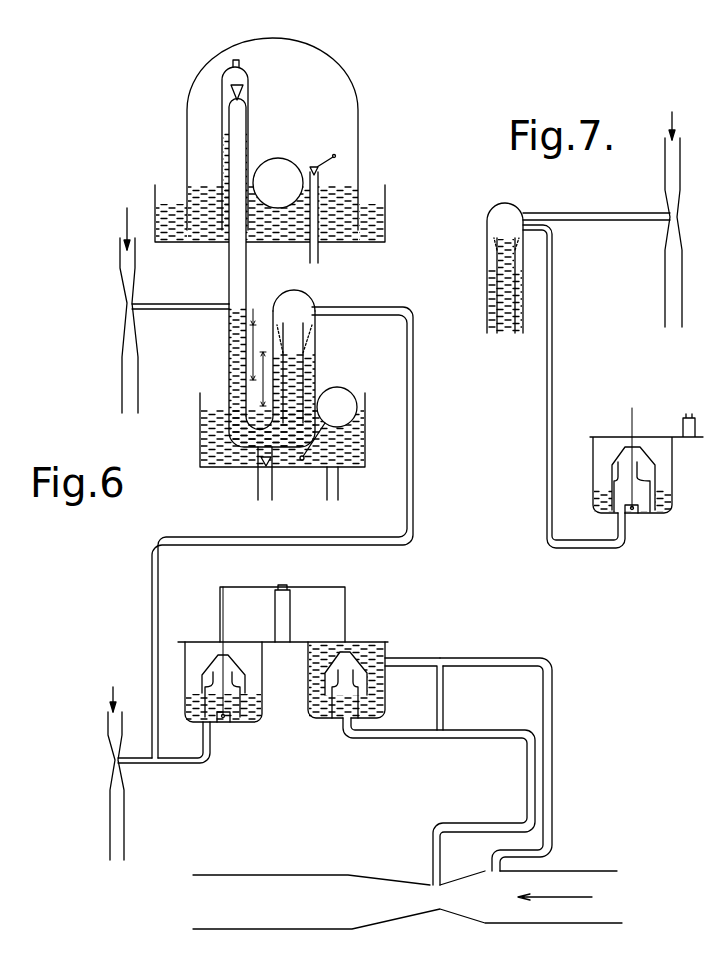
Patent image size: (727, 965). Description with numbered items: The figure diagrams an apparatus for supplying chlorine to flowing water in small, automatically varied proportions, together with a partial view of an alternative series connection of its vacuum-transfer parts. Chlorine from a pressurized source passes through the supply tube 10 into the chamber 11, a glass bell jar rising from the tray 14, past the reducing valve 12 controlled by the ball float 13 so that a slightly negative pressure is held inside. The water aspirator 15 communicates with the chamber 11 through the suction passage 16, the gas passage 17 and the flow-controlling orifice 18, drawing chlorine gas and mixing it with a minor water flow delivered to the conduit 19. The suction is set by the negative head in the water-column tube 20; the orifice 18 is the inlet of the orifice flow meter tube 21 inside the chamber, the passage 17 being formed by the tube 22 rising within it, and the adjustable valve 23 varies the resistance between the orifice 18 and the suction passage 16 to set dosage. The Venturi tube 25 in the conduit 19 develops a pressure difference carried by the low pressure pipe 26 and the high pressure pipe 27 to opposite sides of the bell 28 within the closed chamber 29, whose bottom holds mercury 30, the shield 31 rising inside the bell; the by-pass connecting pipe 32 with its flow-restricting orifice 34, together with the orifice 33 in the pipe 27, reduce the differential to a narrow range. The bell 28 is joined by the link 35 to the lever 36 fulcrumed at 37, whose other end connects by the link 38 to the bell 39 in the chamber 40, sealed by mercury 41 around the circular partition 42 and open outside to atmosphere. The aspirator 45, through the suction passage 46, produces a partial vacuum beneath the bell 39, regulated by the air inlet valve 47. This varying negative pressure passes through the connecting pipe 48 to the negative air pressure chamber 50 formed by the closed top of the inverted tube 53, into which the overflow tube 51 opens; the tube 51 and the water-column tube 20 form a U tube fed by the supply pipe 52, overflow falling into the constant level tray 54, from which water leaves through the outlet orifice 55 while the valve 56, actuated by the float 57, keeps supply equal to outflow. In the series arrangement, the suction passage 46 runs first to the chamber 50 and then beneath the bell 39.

In FIG. 6, the supply tube 10 is at (320, 251).
In FIG. 6, the chamber 11 is at (272, 134).
In FIG. 6, the reducing valve 12 is at (318, 167).
In FIG. 6, the ball float 13 is at (273, 170).
In FIG. 6, the tray 14 is at (385, 195).
In FIG. 6, the water aspirator 15 is at (120, 294).
In FIG. 6, the suction passage 16 is at (179, 306).
In FIG. 6, the gas passage 17 is at (231, 247).
In FIG. 6, the flow-controlling orifice 18 is at (240, 63).
In FIG. 6, the conduit 19 is at (271, 930).
In FIG. 6, the water-column tube 20 is at (229, 330).
In FIG. 6, the orifice flow meter tube 21 is at (222, 117).
In FIG. 6, the tube 22 is at (229, 155).
In FIG. 6, the adjustable valve 23 is at (231, 90).
In FIG. 6, the Venturi tube 25 is at (415, 915).
In FIG. 6, the low pressure pipe 26 is at (527, 768).
In FIG. 6, the high pressure pipe 27 is at (553, 762).
In FIG. 6, the bell 28 is at (345, 655).
In FIG. 6, the closed chamber 29 is at (380, 650).
In FIG. 6, the mercury 30 is at (322, 705).
In FIG. 6, the shield 31 is at (338, 712).
In FIG. 6, the by-pass connecting pipe 32 is at (443, 680).
In FIG. 6, the flow restricting orifice 33 is at (490, 657).
In FIG. 6, the flow-restricting orifice 34 is at (437, 695).
In FIG. 6, the link 35 is at (346, 612).
In FIG. 6, the lever 36 is at (320, 580).
In FIG. 6, the fulcrum 37 is at (282, 587).
In FIG. 6, the link 38 is at (223, 618).
In FIG. 6, the bell 39 is at (210, 665).
In FIG. 7, the bell 39 is at (620, 458).
In FIG. 6, the chamber 40 is at (190, 668).
In FIG. 6, the mercury 41 is at (192, 712).
In FIG. 6, the circular partition 42 is at (238, 712).
In FIG. 6, the aspirator 45 is at (108, 772).
In FIG. 7, the aspirator 45 is at (681, 207).
In FIG. 6, the suction passage 46 is at (190, 764).
In FIG. 7, the suction passage 46 is at (618, 222).
In FIG. 6, the air inlet valve 47 is at (224, 722).
In FIG. 7, the air inlet valve 47 is at (635, 513).
In FIG. 6, the connecting pipe 48 is at (152, 602).
In FIG. 6, the negative air pressure chamber 50 is at (307, 296).
In FIG. 7, the negative air pressure chamber 50 is at (510, 209).
In FIG. 6, the overflow tube 51 is at (300, 358).
In FIG. 6, the supply pipe 52 is at (262, 487).
In FIG. 6, the inverted tube 53 is at (316, 378).
In FIG. 6, the constant level tray 54 is at (366, 425).
In FIG. 6, the outlet orifice 55 is at (339, 472).
In FIG. 6, the valve 56 is at (262, 461).
In FIG. 6, the float 57 is at (343, 392).